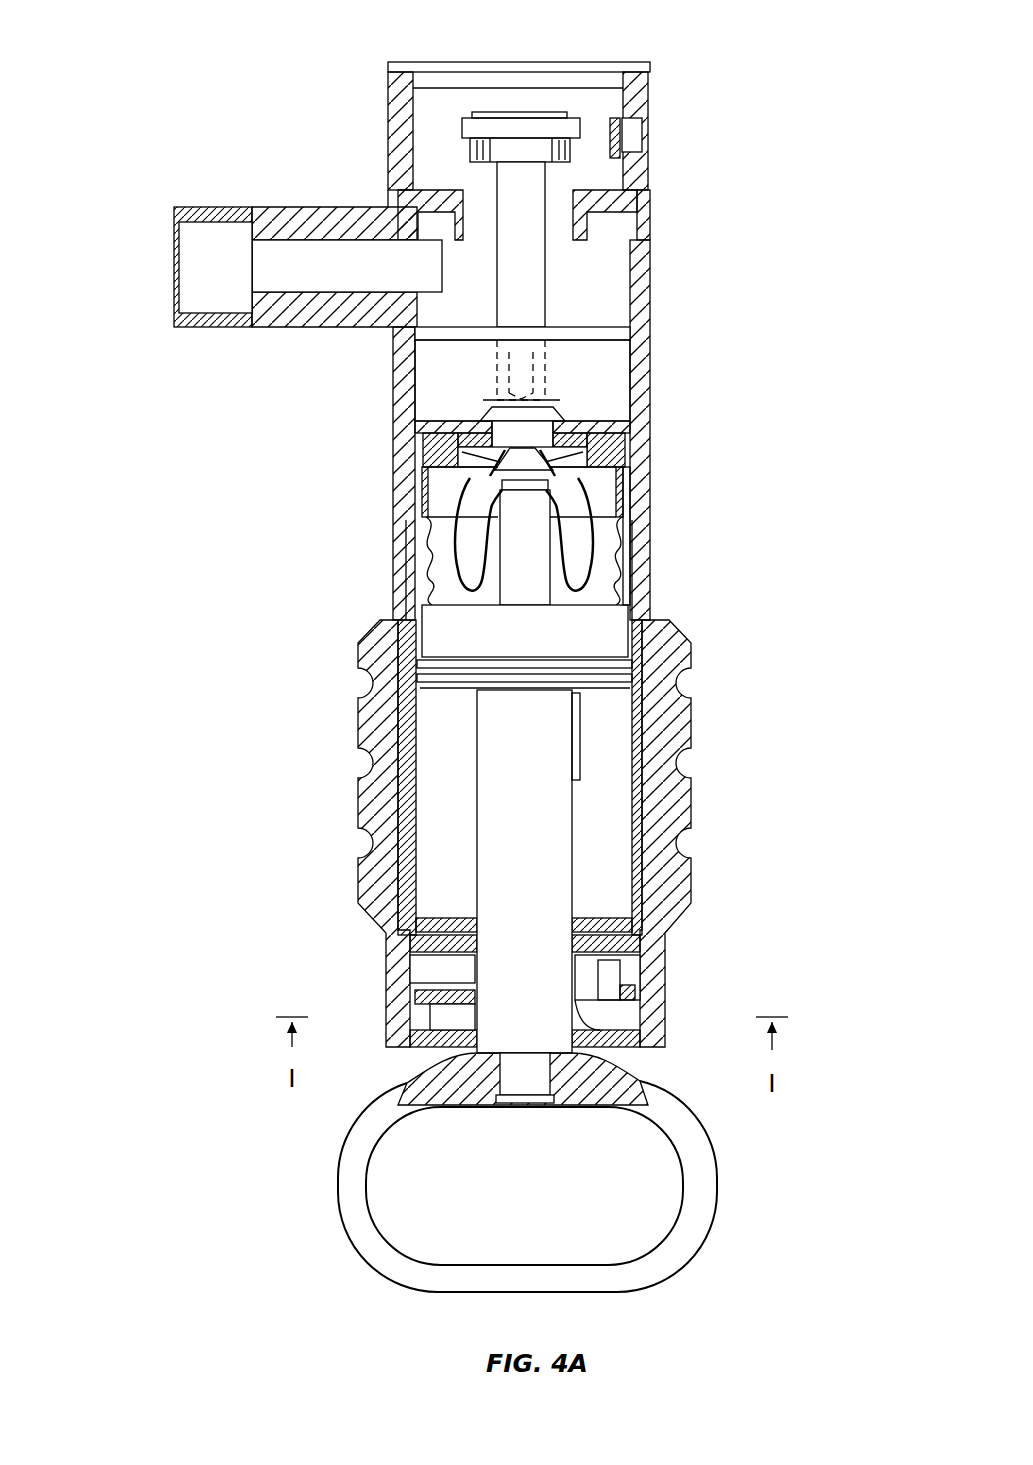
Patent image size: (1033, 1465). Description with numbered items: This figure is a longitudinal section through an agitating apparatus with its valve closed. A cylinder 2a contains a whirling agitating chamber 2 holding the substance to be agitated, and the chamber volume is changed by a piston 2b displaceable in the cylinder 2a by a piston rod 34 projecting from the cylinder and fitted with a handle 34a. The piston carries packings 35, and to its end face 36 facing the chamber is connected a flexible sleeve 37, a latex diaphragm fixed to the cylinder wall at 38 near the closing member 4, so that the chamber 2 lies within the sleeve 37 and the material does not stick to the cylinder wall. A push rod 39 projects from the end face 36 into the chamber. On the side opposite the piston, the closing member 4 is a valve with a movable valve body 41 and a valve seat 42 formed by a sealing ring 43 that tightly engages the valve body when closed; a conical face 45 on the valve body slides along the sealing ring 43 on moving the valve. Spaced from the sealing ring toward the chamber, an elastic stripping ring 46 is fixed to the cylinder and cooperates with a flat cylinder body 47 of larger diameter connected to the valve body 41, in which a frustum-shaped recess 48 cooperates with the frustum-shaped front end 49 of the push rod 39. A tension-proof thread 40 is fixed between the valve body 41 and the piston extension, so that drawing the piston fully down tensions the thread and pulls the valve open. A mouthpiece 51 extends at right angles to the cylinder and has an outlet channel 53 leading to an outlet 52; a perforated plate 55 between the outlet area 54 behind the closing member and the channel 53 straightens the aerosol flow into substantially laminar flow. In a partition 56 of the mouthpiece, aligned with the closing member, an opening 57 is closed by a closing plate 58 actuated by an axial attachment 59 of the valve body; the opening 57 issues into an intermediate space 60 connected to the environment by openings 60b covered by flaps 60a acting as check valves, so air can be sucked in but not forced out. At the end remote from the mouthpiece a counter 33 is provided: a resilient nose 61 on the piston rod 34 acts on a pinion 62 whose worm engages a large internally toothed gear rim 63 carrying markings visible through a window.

The agitating chamber 2 is at (590, 565).
The cylinder 2a is at (640, 610).
The piston 2b is at (440, 627).
The closing member 4 is at (630, 395).
The counter 33 is at (624, 975).
The piston rod 34 is at (495, 826).
The handle 34a is at (355, 1178).
The packings 35 is at (435, 641).
The end face 36 is at (440, 590).
The flexible sleeve 37 is at (440, 525).
The fixing point 38 is at (440, 488).
The push rod 39 is at (535, 530).
The tension-proof thread 40 is at (455, 560).
The valve body 41 is at (492, 412).
The valve seat 42 is at (488, 416).
The sealing ring 43 is at (600, 436).
The conical face 45 is at (575, 405).
The elastic stripping ring 46 is at (622, 455).
The flat cylinder body 47 is at (480, 458).
The frustum-shaped recess 48 is at (460, 444).
The front end of push rod 49 is at (535, 470).
The mouthpiece 51 is at (370, 198).
The outlet 52 is at (195, 268).
The outlet channel 53 is at (290, 252).
The outlet area 54 is at (435, 357).
The perforated plate 55 is at (600, 328).
The partition 56 is at (640, 201).
The opening 57 is at (565, 190).
The closing plate 58 is at (465, 127).
The axial attachment 59 is at (530, 272).
The intermediate space 60 is at (512, 100).
The flaps 60a is at (619, 128).
The openings 60b is at (625, 140).
The resilient nose 61 is at (610, 1048).
The pinion 62 is at (610, 1015).
The gear rim 63 is at (430, 1000).